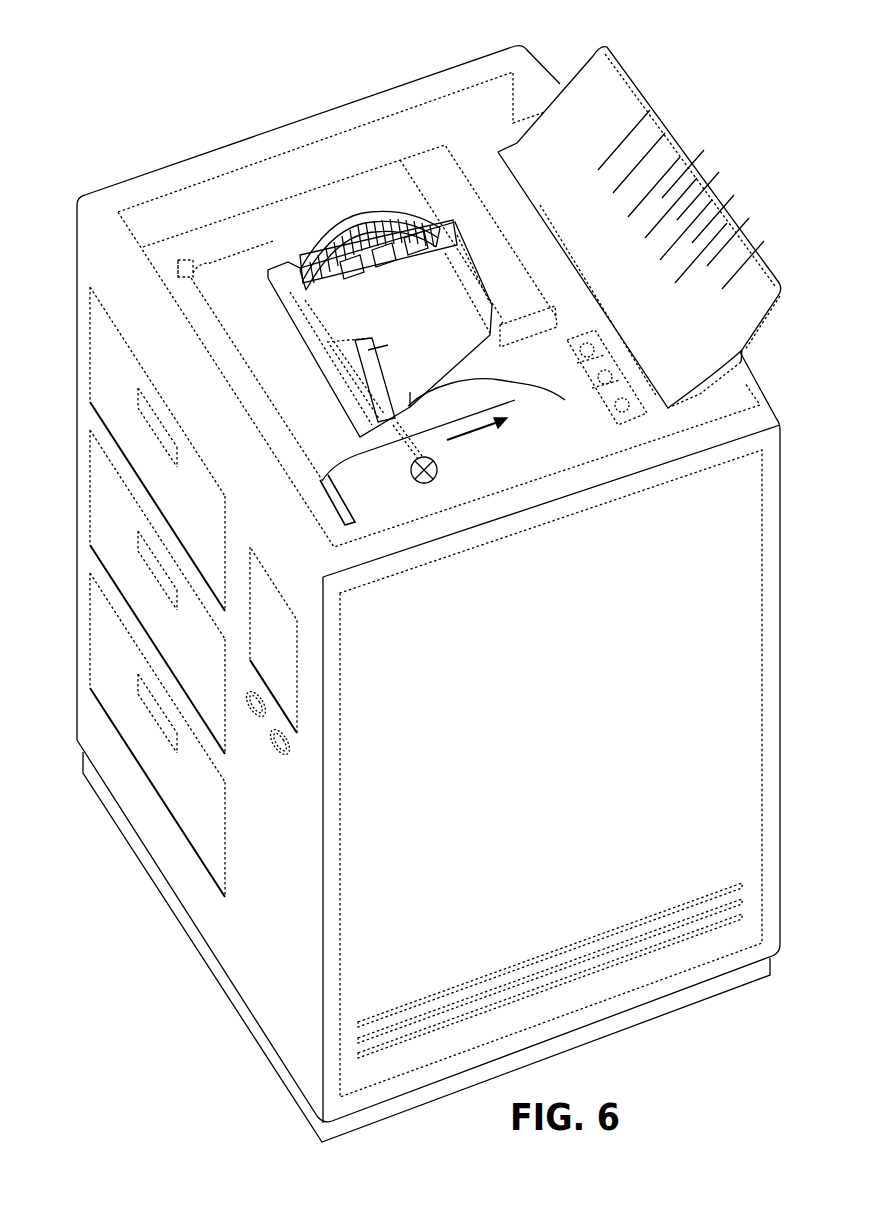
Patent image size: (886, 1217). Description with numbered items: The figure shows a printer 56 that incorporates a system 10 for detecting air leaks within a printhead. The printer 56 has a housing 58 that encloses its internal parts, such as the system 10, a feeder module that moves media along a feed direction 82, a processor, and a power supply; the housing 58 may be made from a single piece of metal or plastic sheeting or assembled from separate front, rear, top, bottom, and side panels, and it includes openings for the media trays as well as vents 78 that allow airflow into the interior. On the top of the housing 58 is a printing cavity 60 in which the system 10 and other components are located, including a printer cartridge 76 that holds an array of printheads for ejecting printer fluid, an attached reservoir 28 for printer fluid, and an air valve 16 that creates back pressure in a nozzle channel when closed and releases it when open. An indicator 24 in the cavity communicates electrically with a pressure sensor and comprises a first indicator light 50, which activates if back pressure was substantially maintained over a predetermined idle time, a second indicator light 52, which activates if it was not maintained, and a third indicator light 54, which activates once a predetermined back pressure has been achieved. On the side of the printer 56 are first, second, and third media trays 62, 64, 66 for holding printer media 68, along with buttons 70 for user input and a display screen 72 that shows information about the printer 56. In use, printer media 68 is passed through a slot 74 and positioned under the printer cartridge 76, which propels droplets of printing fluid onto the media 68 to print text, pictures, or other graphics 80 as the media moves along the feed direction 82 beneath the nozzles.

The system 10 is at (356, 159).
The air valve 16 is at (438, 470).
The indicator 24 is at (573, 330).
The reservoir 28 is at (520, 250).
The first indicator light 50 is at (595, 345).
The second indicator light 52 is at (613, 372).
The third indicator light 54 is at (628, 398).
The printer 56 is at (222, 68).
The housing 58 is at (291, 123).
The printing cavity 60 is at (585, 436).
The first media tray 62 is at (100, 352).
The second media tray 64 is at (100, 495).
The third media tray 66 is at (100, 638).
The printer media 68 is at (488, 364).
The buttons 70 is at (278, 758).
The display screen 72 is at (290, 666).
The slot 74 is at (340, 500).
The printer cartridge 76 is at (272, 278).
The vents 78 is at (547, 948).
The graphics 80 is at (445, 345).
The feed direction 82 is at (480, 432).